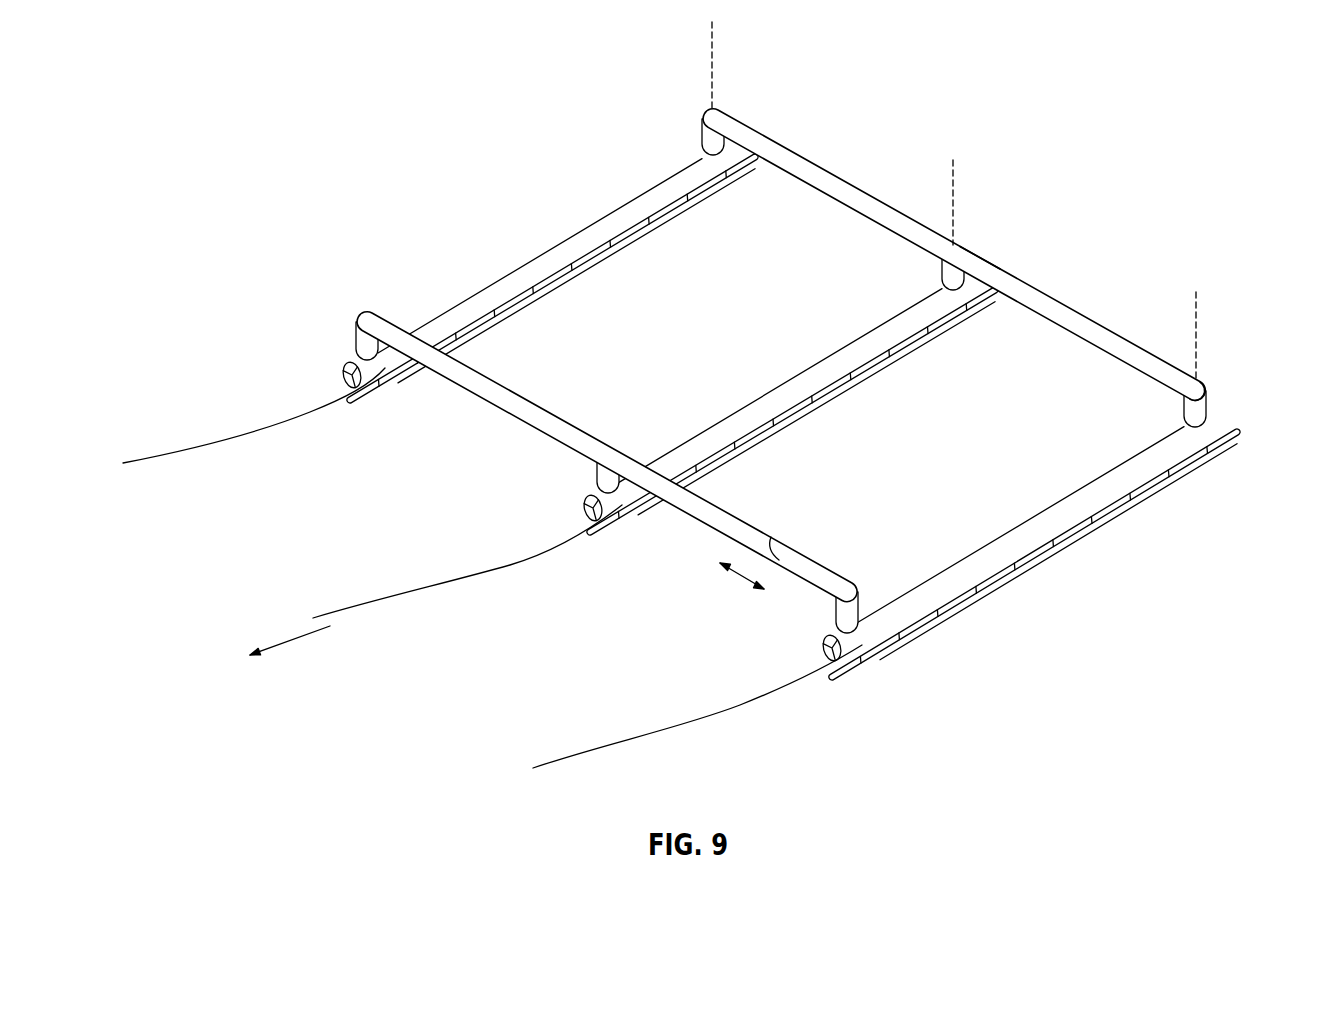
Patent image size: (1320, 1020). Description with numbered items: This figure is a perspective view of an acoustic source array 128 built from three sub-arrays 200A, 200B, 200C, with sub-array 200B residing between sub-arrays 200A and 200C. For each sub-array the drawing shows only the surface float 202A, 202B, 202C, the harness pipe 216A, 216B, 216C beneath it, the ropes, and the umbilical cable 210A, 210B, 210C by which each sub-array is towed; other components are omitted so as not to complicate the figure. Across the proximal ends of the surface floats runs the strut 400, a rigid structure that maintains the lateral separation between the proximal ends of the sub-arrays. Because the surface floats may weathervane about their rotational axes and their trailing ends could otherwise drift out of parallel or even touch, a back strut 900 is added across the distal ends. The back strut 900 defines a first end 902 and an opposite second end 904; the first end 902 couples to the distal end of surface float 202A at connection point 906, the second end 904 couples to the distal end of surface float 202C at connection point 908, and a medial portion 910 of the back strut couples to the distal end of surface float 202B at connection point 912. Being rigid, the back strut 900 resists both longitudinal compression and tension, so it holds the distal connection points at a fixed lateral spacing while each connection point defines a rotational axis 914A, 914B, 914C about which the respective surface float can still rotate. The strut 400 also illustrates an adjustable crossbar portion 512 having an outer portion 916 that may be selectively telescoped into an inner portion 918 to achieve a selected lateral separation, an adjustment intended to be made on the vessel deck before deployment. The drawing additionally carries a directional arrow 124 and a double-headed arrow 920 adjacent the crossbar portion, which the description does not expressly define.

The acoustic source array 128 is at (696, 391).
The back strut 900 is at (945, 221).
The first end 902 is at (712, 112).
The second end 904 is at (1198, 382).
The connection point 906 is at (701, 150).
The connection point 908 is at (1182, 423).
The medial portion 910 is at (968, 232).
The connection point 912 is at (941, 285).
The rotational axis 914A is at (710, 46).
The rotational axis 914B is at (952, 183).
The rotational axis 914C is at (1195, 297).
The outer portion 916 is at (806, 562).
The inner portion 918 is at (757, 535).
The direction of movement 920 is at (743, 580).
The strut 400 is at (617, 446).
The crossbar portion 512 is at (700, 502).
The direction toward rack 124 is at (307, 633).
The sub-array 200A is at (552, 274).
The sub-array 200B is at (792, 408).
The sub-array 200C is at (1034, 550).
The surface float 202A is at (598, 222).
The surface float 202B is at (843, 348).
The surface float 202C is at (1083, 487).
The harness pipe 216A is at (634, 183).
The harness pipe 216B is at (850, 393).
The harness pipe 216C is at (1116, 456).
The umbilical cable 210A is at (200, 447).
The umbilical cable 210B is at (445, 585).
The umbilical cable 210C is at (688, 720).